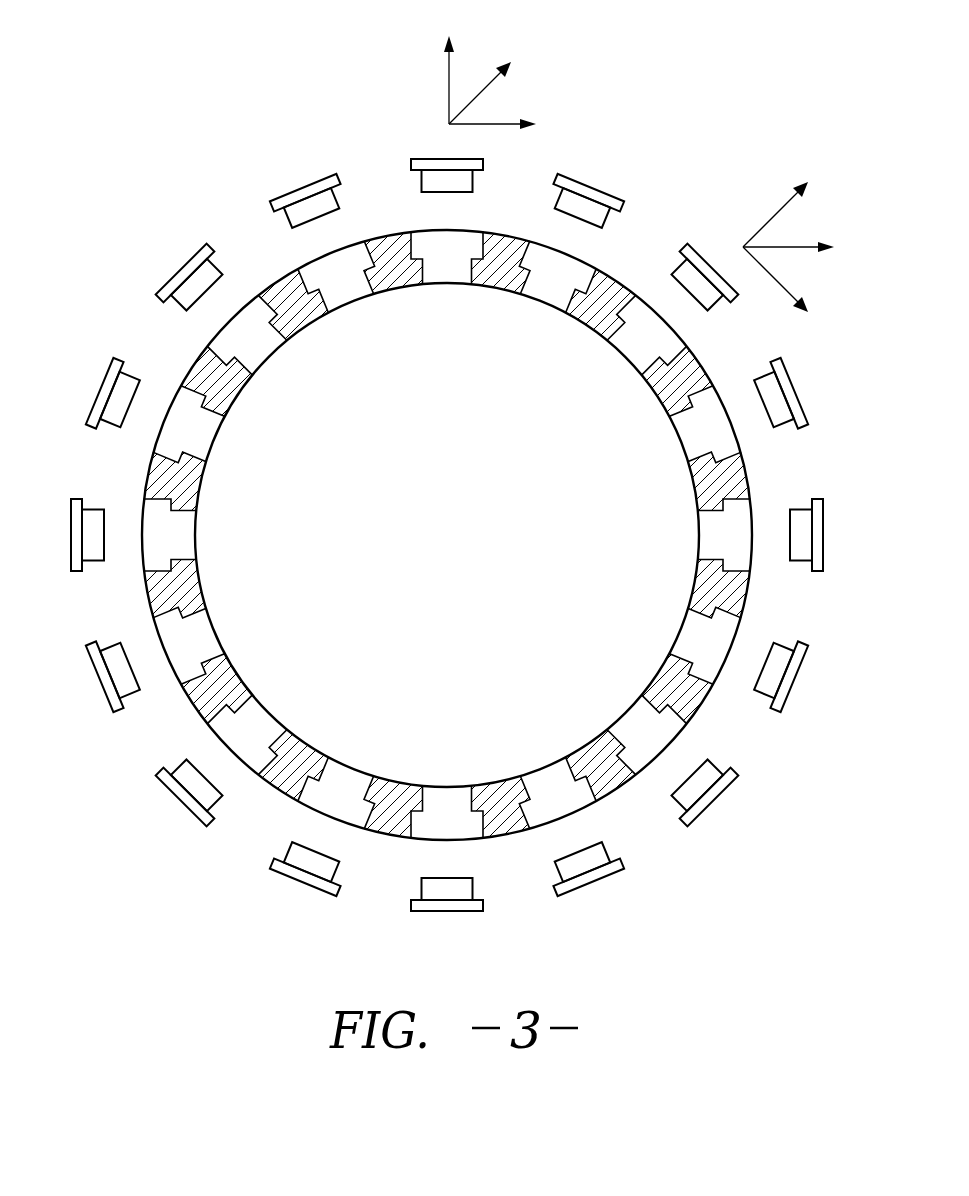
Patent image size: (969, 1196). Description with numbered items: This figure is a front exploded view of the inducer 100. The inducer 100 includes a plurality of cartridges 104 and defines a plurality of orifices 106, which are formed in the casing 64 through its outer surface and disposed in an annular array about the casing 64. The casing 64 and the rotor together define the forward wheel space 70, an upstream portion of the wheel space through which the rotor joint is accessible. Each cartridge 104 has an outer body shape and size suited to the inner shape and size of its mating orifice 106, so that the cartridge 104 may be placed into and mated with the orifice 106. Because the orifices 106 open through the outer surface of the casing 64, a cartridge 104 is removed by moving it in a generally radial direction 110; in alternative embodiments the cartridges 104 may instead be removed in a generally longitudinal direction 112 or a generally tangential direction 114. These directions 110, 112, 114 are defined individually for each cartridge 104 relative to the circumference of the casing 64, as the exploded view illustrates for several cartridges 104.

The casing 64 is at (281, 278).
The forward wheel space 70 is at (467, 585).
The inducer 100 is at (678, 117).
The cartridge 104 is at (421, 183).
The orifice 106 is at (448, 245).
The radial direction 110 is at (448, 90).
The longitudinal direction 112 is at (485, 80).
The tangential direction 114 is at (495, 123).